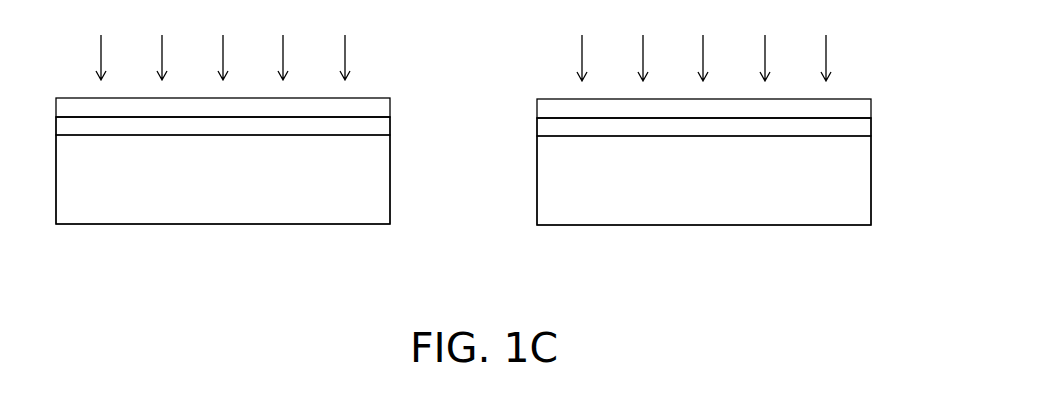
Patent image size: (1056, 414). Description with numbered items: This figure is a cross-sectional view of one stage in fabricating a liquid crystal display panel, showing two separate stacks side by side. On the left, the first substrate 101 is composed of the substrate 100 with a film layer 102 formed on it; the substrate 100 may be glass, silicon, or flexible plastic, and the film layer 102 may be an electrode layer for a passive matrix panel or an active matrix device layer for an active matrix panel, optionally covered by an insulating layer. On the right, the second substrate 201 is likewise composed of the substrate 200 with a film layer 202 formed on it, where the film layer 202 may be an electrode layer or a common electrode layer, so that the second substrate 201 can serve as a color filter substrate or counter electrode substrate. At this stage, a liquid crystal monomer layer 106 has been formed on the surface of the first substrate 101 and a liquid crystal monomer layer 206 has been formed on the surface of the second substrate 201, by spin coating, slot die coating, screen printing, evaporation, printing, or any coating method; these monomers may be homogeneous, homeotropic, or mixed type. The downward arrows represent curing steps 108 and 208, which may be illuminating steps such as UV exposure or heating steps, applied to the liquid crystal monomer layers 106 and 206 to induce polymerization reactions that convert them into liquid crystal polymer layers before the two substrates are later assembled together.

The substrate 100 is at (373, 185).
The first substrate 101 is at (479, 137).
The film layer 102 is at (373, 126).
The liquid crystal monomer layer 106 is at (373, 109).
The curing step 108 is at (345, 52).
The substrate 200 is at (854, 186).
The second substrate 201 is at (961, 137).
The film layer 202 is at (854, 127).
The liquid crystal monomer layer 206 is at (854, 110).
The curing step 208 is at (826, 52).